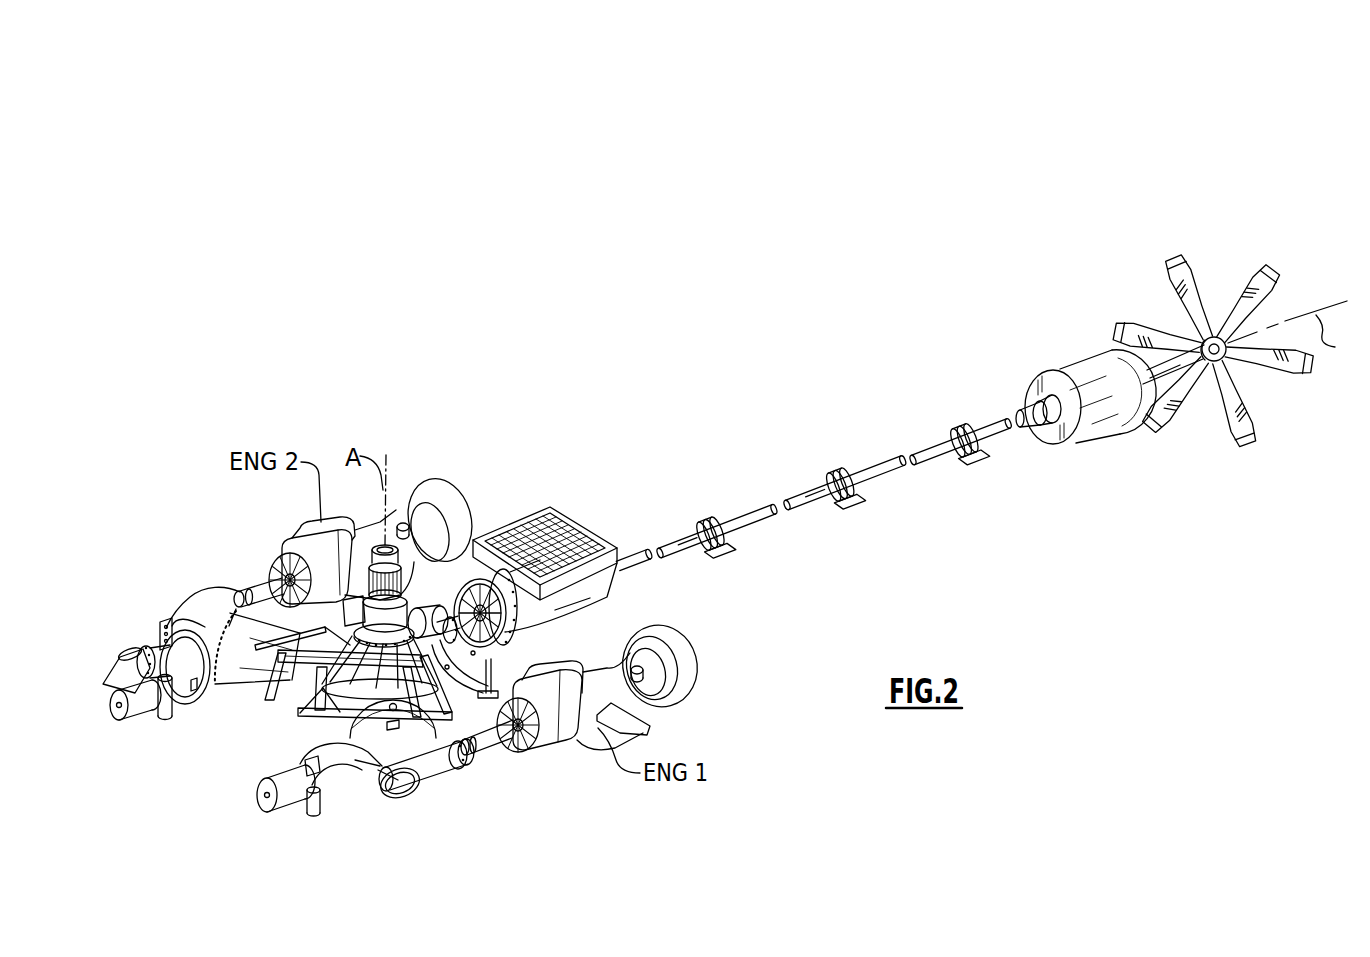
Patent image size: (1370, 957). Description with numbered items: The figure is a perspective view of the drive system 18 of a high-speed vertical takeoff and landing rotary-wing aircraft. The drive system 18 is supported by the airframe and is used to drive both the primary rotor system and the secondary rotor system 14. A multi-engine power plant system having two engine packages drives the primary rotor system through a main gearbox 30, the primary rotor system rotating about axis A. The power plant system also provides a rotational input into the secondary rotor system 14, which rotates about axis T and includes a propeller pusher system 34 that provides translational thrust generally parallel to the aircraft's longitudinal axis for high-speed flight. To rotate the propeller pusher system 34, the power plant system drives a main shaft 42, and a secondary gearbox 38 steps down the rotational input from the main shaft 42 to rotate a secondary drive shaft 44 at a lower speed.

The secondary rotor system 14 is at (1262, 260).
The drive system 18 is at (786, 384).
The main gearbox 30 is at (1229, 184).
The propeller pusher system 34 is at (1271, 292).
The secondary gearbox 38 is at (1075, 358).
The main shaft 42 is at (1003, 433).
The secondary drive shaft 44 is at (1184, 363).